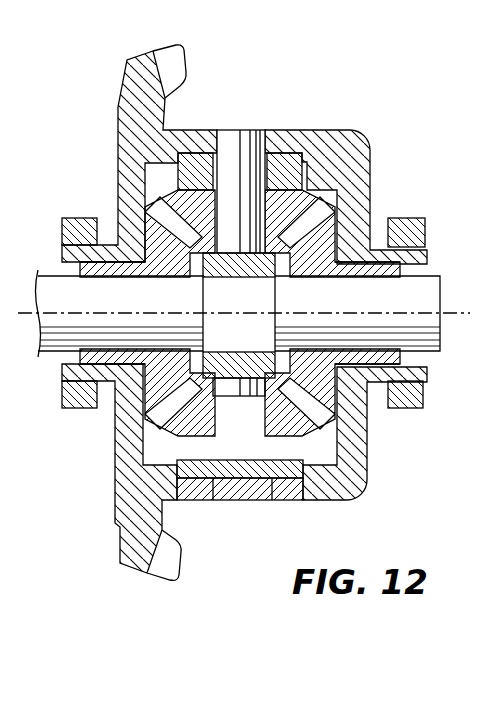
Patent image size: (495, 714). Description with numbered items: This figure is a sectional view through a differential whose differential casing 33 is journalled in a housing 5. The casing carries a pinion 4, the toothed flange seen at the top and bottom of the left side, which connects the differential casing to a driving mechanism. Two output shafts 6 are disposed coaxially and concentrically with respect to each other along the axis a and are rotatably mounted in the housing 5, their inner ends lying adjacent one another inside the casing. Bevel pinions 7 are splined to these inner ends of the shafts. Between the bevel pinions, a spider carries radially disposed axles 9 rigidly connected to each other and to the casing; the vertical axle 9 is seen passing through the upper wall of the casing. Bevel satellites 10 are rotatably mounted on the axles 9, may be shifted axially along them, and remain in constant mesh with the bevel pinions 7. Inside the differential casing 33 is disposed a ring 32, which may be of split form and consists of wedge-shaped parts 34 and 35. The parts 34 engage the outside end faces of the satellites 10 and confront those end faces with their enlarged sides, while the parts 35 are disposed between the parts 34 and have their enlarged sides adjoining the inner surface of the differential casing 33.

The axle 9 is at (250, 143).
The wedge-shaped part 34 is at (291, 165).
The bevel satellite 10 is at (302, 195).
The housing 5 is at (80, 228).
The output shaft 6 is at (413, 288).
The axis a is at (440, 313).
The bevel pinion 7 is at (143, 408).
The differential casing 33 is at (113, 506).
The pinion 4 is at (163, 567).
The wedge-shaped part 35 is at (214, 472).
The ring 32 is at (271, 486).